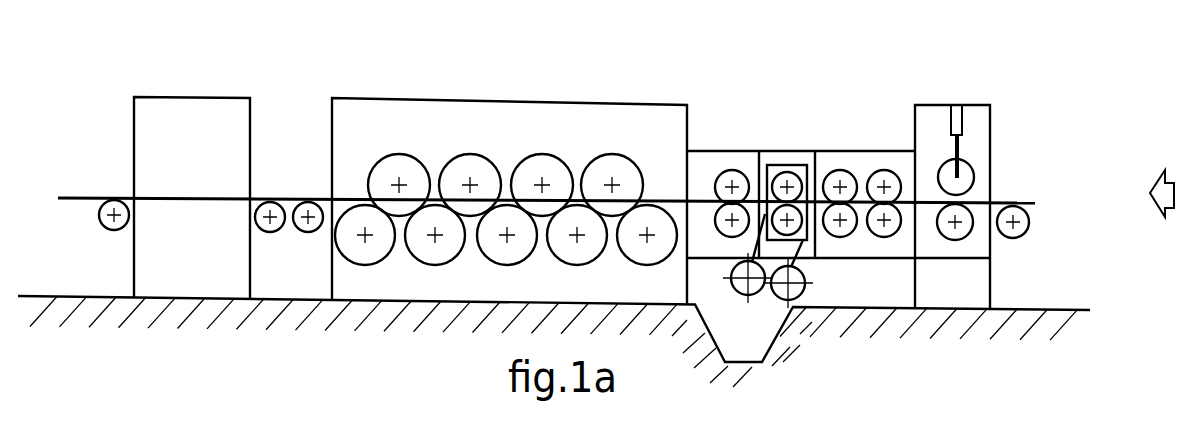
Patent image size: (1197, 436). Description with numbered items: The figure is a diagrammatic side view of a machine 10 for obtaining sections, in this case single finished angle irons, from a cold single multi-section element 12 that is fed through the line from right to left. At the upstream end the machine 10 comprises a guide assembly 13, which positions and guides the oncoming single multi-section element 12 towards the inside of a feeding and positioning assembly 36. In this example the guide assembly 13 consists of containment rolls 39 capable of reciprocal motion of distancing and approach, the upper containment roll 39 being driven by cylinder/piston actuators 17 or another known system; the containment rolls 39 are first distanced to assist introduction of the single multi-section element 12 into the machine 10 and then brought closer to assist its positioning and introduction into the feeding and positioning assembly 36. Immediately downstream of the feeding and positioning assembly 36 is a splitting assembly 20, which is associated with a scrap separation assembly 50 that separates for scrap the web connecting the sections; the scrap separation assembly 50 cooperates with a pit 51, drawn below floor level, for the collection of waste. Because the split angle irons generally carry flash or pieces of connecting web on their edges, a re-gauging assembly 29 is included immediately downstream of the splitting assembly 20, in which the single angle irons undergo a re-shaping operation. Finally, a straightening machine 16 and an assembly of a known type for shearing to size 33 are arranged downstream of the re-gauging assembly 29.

The machine 10 is at (700, 82).
The single multi-section element 12 is at (1012, 202).
The guide assembly 13 is at (982, 100).
The straightening machine 16 is at (588, 93).
The cylinder/piston actuators 17 is at (952, 113).
The splitting assembly 20 is at (797, 142).
The re-gauging assembly 29 is at (731, 143).
The assembly for shearing to size 33 is at (225, 90).
The feeding and positioning assembly 36 is at (865, 143).
The containment rolls 39 is at (967, 177).
The scrap separation assembly 50 is at (727, 292).
The pit 51 is at (767, 340).